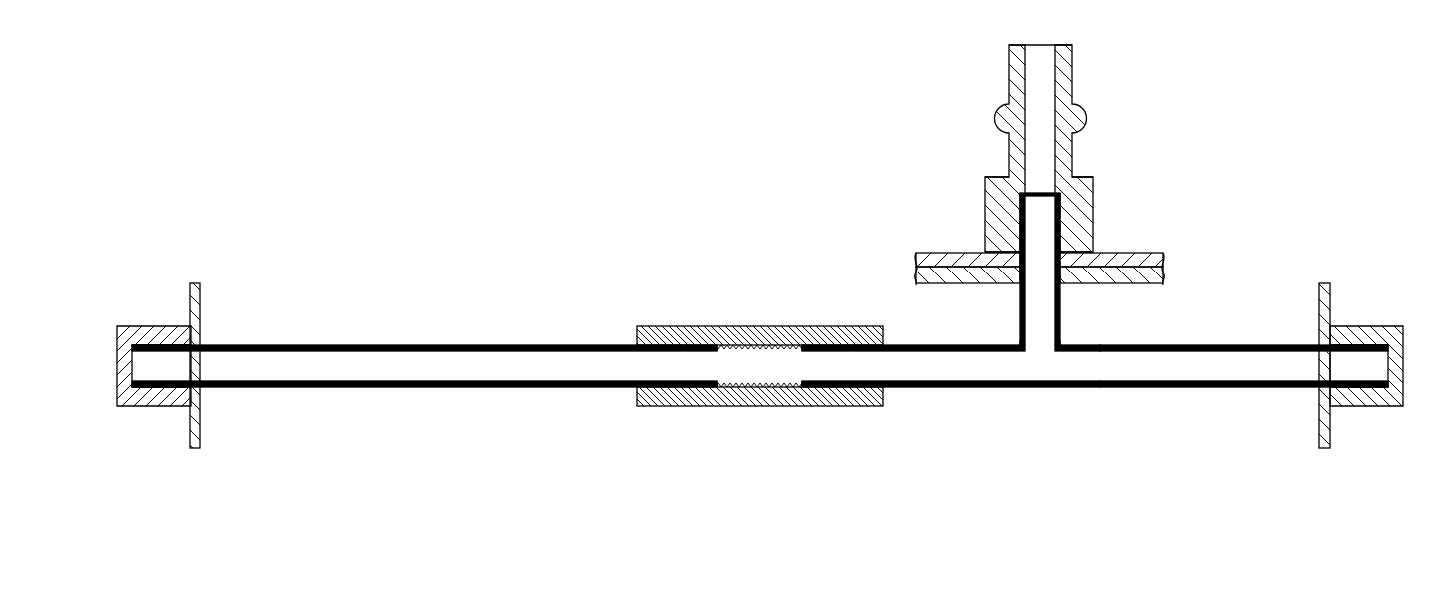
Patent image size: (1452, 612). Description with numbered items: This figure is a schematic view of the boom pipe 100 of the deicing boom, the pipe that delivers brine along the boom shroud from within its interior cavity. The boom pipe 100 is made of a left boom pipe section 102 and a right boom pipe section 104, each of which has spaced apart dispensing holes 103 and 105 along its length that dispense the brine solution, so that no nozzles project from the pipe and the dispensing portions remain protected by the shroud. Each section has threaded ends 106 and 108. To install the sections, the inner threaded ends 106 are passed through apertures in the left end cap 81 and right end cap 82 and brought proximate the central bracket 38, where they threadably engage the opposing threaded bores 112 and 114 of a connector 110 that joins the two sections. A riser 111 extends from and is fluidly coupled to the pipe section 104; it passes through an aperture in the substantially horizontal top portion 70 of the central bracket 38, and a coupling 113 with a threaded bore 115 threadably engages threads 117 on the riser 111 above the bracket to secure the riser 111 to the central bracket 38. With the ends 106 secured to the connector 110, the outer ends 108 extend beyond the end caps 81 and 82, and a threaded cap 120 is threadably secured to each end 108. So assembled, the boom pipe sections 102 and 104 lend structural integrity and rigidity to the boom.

The central bracket 38 is at (1153, 244).
The top portion 70 is at (938, 252).
The left end cap 81 is at (195, 283).
The right end cap 82 is at (1323, 283).
The boom pipe 100 is at (431, 318).
The left boom pipe section 102 is at (299, 392).
The dispensing holes 103 is at (373, 389).
The right boom pipe section 104 is at (1038, 368).
The dispensing holes 105 is at (1235, 388).
The threaded ends 106 is at (680, 405).
The threaded ends 108 is at (172, 395).
The connector 110 is at (738, 325).
The riser 111 is at (1062, 297).
The threaded bore 112 is at (637, 388).
The coupling 113 is at (1080, 177).
The threaded bore 114 is at (883, 343).
The threaded bore 115 is at (1020, 212).
The threads 117 is at (1062, 210).
The threaded cap 120 is at (117, 400).